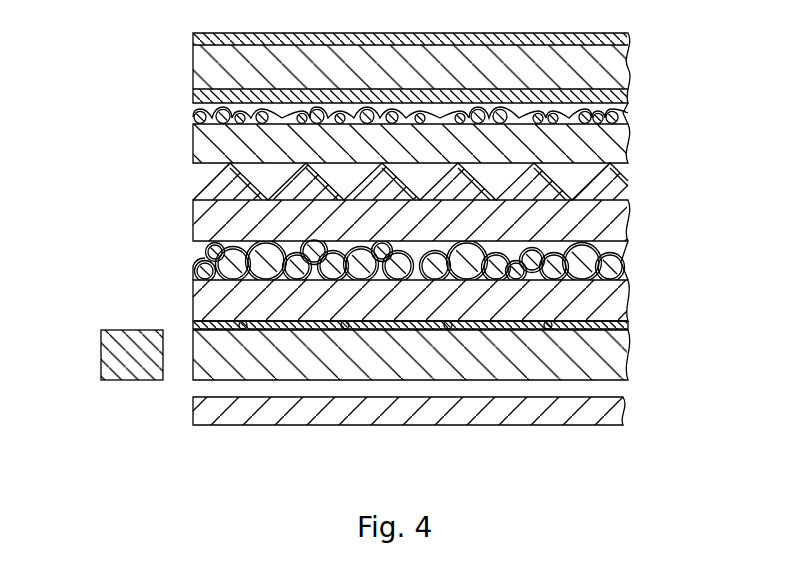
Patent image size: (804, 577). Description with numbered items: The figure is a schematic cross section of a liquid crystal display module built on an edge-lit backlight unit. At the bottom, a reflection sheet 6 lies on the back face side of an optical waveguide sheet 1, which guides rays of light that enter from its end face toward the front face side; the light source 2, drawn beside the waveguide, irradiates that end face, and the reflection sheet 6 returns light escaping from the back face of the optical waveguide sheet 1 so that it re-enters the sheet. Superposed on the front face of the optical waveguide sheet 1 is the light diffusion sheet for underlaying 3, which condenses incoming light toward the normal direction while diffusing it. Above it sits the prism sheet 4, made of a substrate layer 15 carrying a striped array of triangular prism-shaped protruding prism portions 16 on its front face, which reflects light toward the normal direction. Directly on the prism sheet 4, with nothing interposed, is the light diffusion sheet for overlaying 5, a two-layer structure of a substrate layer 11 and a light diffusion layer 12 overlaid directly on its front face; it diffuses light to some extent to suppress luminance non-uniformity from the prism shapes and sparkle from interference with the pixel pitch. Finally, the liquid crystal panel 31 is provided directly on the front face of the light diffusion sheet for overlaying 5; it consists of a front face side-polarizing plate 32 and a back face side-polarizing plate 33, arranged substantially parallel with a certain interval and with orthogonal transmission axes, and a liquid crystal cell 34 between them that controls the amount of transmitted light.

The optical waveguide sheet 1 is at (620, 360).
The light source 2 is at (118, 361).
The light diffusion sheet for underlaying 3 is at (637, 297).
The prism sheet 4 is at (412, 202).
The light diffusion sheet for overlaying 5 is at (418, 121).
The reflection sheet 6 is at (620, 412).
The substrate layer 11 is at (193, 147).
The light diffusion layer 12 is at (637, 112).
The substrate layer 15 is at (193, 218).
The protruding prism portion 16 is at (223, 178).
The liquid crystal panel 31 is at (418, 70).
The front face side-polarizing plate 32 is at (193, 45).
The back face side-polarizing plate 33 is at (193, 100).
The liquid crystal cell 34 is at (193, 70).